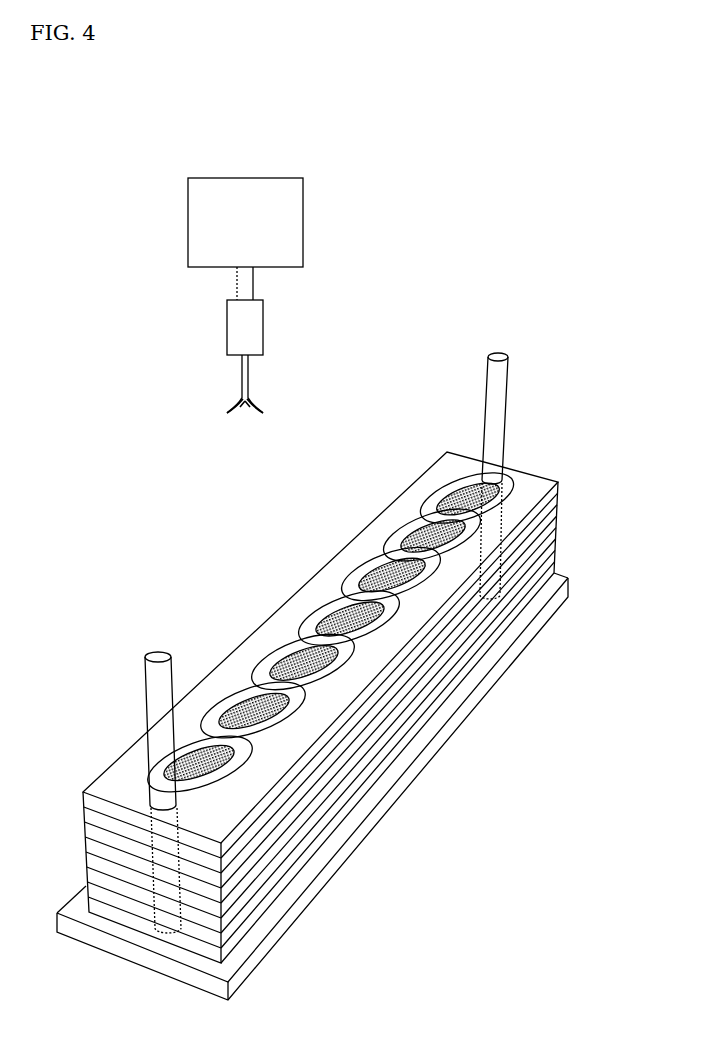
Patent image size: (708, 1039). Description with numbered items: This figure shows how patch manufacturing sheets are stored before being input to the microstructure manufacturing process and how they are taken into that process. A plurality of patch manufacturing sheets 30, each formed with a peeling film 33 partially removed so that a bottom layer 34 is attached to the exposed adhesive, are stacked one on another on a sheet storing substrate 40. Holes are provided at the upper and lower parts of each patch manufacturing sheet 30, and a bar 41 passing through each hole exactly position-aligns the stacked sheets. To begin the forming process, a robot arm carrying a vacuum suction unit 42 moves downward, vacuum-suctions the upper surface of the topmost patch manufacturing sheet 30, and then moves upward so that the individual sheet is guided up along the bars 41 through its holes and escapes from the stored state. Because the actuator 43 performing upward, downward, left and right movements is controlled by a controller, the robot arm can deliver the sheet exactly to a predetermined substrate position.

The patch manufacturing sheet 30 is at (562, 493).
The peeling film 33 is at (400, 500).
The bottom layer 34 is at (297, 593).
The sheet storing substrate 40 is at (567, 598).
The bar 41 is at (498, 350).
The vacuum suction unit 42 is at (263, 333).
The actuator 43 is at (270, 178).